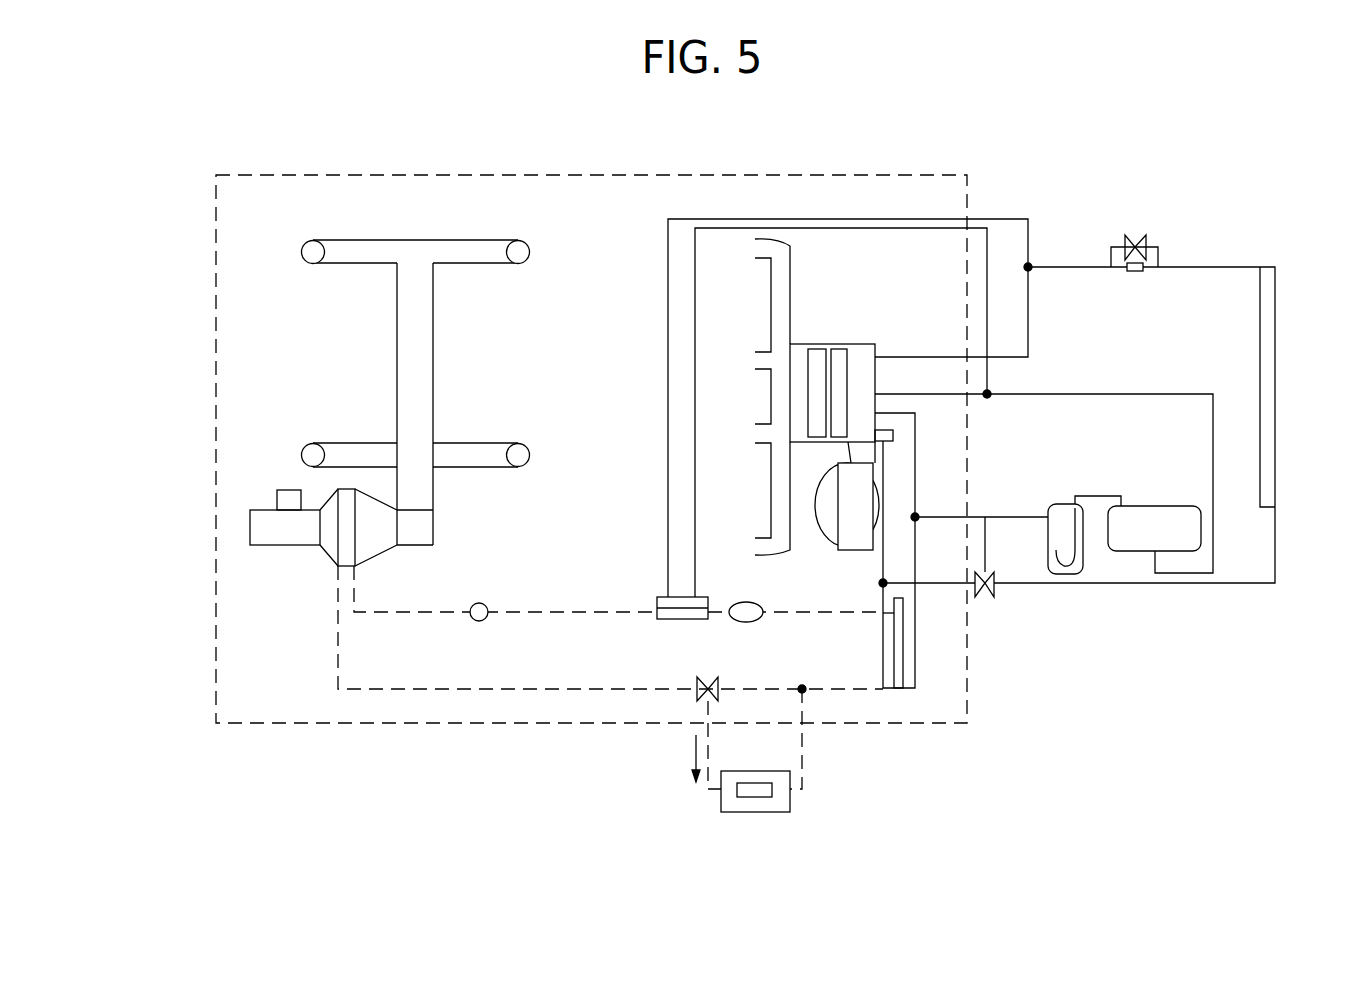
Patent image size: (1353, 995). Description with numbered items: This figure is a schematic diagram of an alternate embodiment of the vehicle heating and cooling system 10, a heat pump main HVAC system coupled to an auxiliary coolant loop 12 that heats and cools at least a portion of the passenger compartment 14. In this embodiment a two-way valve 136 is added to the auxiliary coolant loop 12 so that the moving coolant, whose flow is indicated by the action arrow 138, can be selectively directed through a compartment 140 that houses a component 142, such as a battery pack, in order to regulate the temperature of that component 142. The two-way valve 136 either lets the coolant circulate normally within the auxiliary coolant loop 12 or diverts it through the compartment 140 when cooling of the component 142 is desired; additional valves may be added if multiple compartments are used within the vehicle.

The vehicle heating and cooling system 10 is at (1254, 223).
The auxiliary coolant loop 12 is at (381, 694).
The passenger compartment 14 is at (216, 383).
The two-way valve 136 is at (718, 684).
The action arrow 138 is at (696, 757).
The compartment 140 is at (790, 805).
The component 142 is at (750, 797).